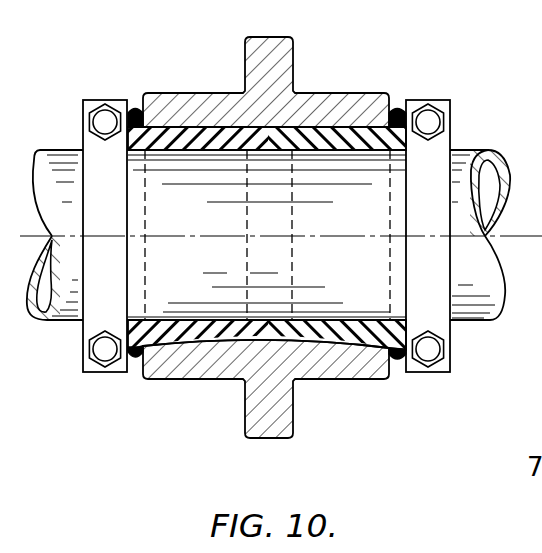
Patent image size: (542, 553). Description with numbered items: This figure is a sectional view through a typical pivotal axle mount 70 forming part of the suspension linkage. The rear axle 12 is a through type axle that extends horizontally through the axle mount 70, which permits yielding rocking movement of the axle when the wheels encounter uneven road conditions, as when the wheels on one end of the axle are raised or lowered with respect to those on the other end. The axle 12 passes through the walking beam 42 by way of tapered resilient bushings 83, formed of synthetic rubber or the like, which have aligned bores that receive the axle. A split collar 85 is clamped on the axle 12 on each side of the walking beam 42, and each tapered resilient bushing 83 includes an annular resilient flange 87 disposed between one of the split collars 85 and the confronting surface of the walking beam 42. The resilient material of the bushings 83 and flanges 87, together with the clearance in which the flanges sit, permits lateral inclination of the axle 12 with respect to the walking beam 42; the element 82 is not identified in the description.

The rear axle 12 is at (467, 303).
The walking beam 42 is at (294, 61).
The axle mount 70 is at (451, 100).
The upper seal band 82 is at (147, 127).
The tapered resilient bushing 83 is at (372, 130).
The split collar 85 is at (115, 370).
The annular resilient flange 87 is at (137, 354).